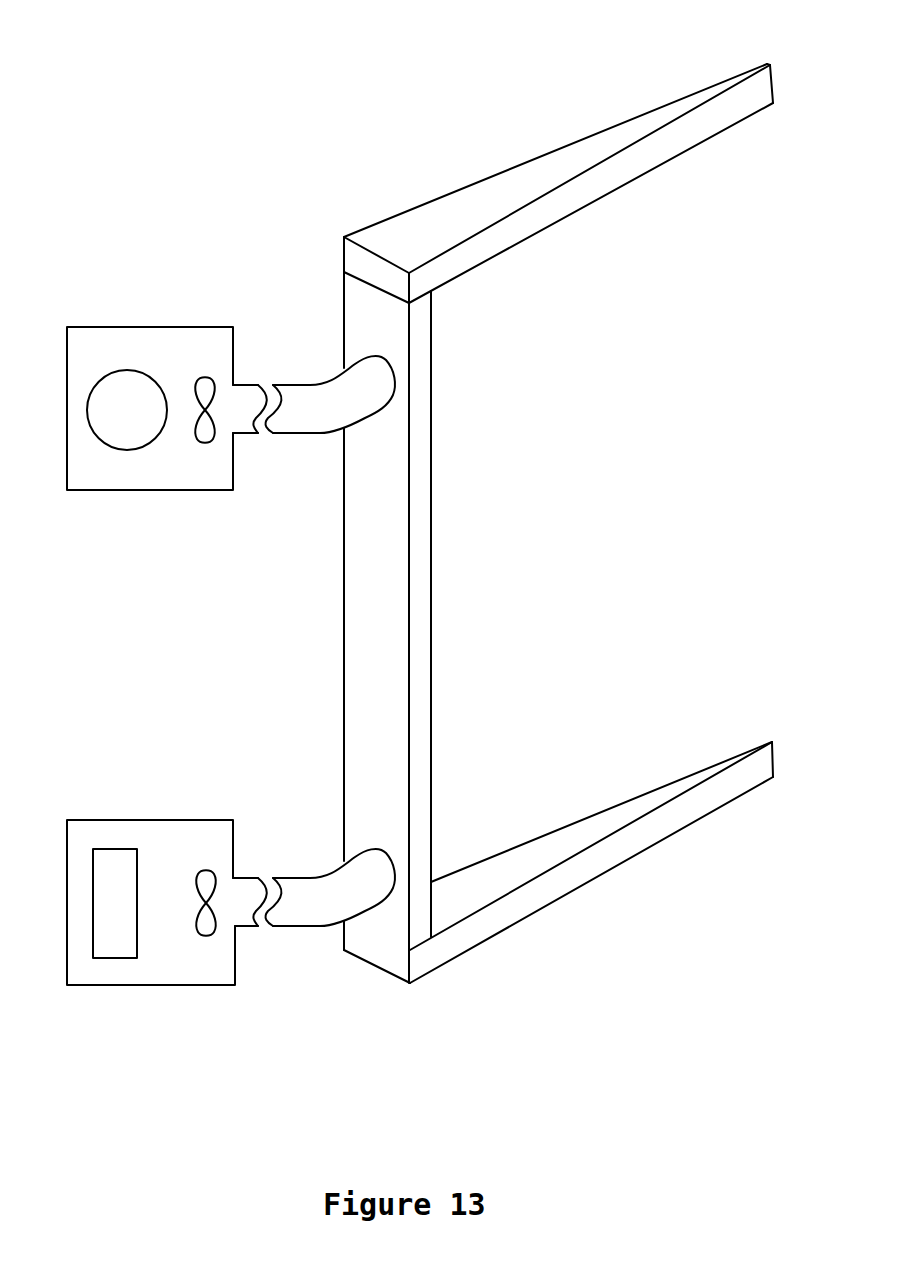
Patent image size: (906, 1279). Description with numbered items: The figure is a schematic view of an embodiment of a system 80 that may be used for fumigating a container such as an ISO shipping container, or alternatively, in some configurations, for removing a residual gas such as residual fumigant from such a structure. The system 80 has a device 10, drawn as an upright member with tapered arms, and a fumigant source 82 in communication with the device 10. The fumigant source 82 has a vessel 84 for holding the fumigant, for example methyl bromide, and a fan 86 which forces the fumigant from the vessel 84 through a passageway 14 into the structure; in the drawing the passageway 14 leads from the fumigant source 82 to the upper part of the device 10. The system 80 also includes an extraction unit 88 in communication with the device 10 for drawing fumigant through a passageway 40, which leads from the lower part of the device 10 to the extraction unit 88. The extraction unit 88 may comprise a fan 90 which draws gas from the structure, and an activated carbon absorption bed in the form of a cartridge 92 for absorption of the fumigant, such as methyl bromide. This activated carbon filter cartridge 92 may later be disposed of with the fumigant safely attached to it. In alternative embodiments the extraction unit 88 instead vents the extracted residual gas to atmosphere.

The system 80 is at (90, 62).
The device 10 is at (478, 198).
The passageway 14 is at (379, 396).
The passageway 40 is at (382, 891).
The fumigant source 82 is at (142, 327).
The vessel 84 is at (130, 450).
The fan 86 is at (210, 443).
The extraction unit 88 is at (163, 818).
The fan 90 is at (210, 937).
The cartridge 92 is at (112, 958).